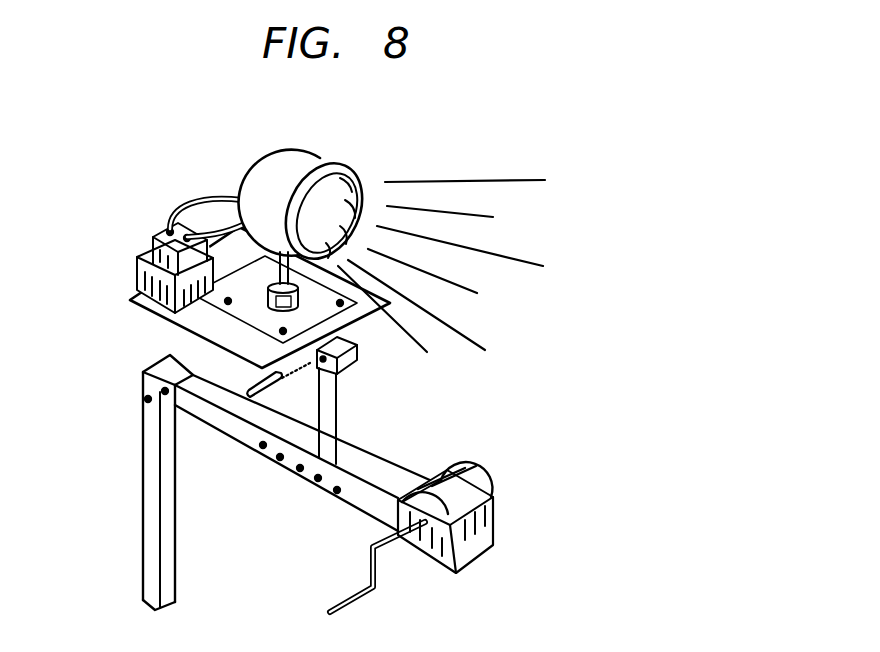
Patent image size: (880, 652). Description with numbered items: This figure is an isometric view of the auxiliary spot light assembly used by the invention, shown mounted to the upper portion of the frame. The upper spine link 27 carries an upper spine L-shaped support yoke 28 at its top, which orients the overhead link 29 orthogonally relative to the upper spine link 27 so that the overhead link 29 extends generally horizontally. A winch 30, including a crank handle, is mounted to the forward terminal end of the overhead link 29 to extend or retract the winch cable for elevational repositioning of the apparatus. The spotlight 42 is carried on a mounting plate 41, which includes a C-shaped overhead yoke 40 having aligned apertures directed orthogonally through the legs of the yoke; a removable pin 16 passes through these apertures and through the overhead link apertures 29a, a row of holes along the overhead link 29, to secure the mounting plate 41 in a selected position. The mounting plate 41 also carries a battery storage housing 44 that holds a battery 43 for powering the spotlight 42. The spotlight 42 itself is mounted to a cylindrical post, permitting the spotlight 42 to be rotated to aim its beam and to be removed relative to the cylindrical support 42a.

The removable pin 16 is at (270, 394).
The upper spine link 27 is at (176, 519).
The upper spine L-shaped support yoke 28 is at (142, 378).
The overhead link 29 is at (368, 488).
The overhead link apertures 29a is at (322, 480).
The winch 30 is at (470, 482).
The C-shaped overhead yoke 40 is at (358, 350).
The mounting plate 41 is at (216, 323).
The spotlight 42 is at (320, 164).
The cylindrical support 42a is at (256, 372).
The battery 43 is at (158, 230).
The battery storage housing 44 is at (139, 258).